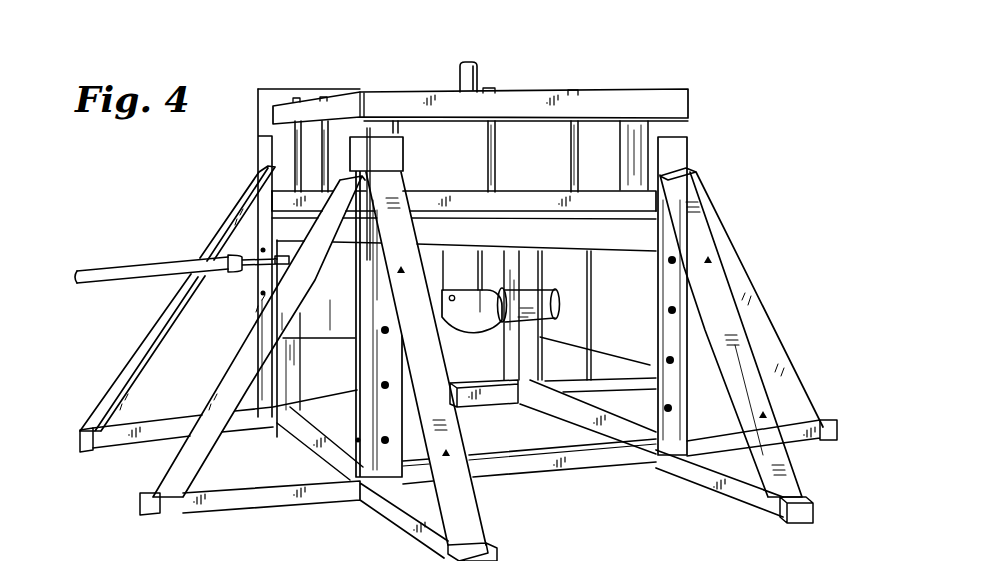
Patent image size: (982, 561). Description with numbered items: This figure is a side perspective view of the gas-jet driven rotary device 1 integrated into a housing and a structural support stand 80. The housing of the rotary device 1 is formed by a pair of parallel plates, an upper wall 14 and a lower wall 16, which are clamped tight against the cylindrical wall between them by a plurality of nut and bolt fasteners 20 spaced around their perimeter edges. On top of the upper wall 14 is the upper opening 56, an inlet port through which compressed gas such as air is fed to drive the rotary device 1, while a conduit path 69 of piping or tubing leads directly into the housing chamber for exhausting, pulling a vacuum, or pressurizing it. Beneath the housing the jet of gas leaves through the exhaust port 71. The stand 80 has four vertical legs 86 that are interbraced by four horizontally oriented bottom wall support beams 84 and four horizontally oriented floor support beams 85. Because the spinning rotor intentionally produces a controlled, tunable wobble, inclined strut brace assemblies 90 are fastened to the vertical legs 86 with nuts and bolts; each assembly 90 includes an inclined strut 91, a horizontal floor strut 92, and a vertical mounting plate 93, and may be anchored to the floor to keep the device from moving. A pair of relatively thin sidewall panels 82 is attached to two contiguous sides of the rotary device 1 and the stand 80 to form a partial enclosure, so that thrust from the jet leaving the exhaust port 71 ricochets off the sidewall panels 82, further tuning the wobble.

The rotary device 1 is at (539, 75).
The upper wall 14 is at (384, 93).
The lower wall 16 is at (648, 200).
The nut and bolt fasteners 20 is at (312, 140).
The upper opening 56 is at (458, 52).
The conduit path 69 is at (97, 285).
The exhaust port 71 is at (558, 304).
The support stand 80 is at (792, 240).
The sidewall panels 82 is at (670, 93).
The bottom wall support beams 84 is at (277, 230).
The floor support beams 85 is at (557, 408).
The vertical legs 86 is at (375, 483).
The inclined strut brace assemblies 90 is at (238, 207).
The inclined strut 91 is at (143, 353).
The horizontal floor strut 92 is at (168, 422).
The vertical mounting plate 93 is at (260, 292).